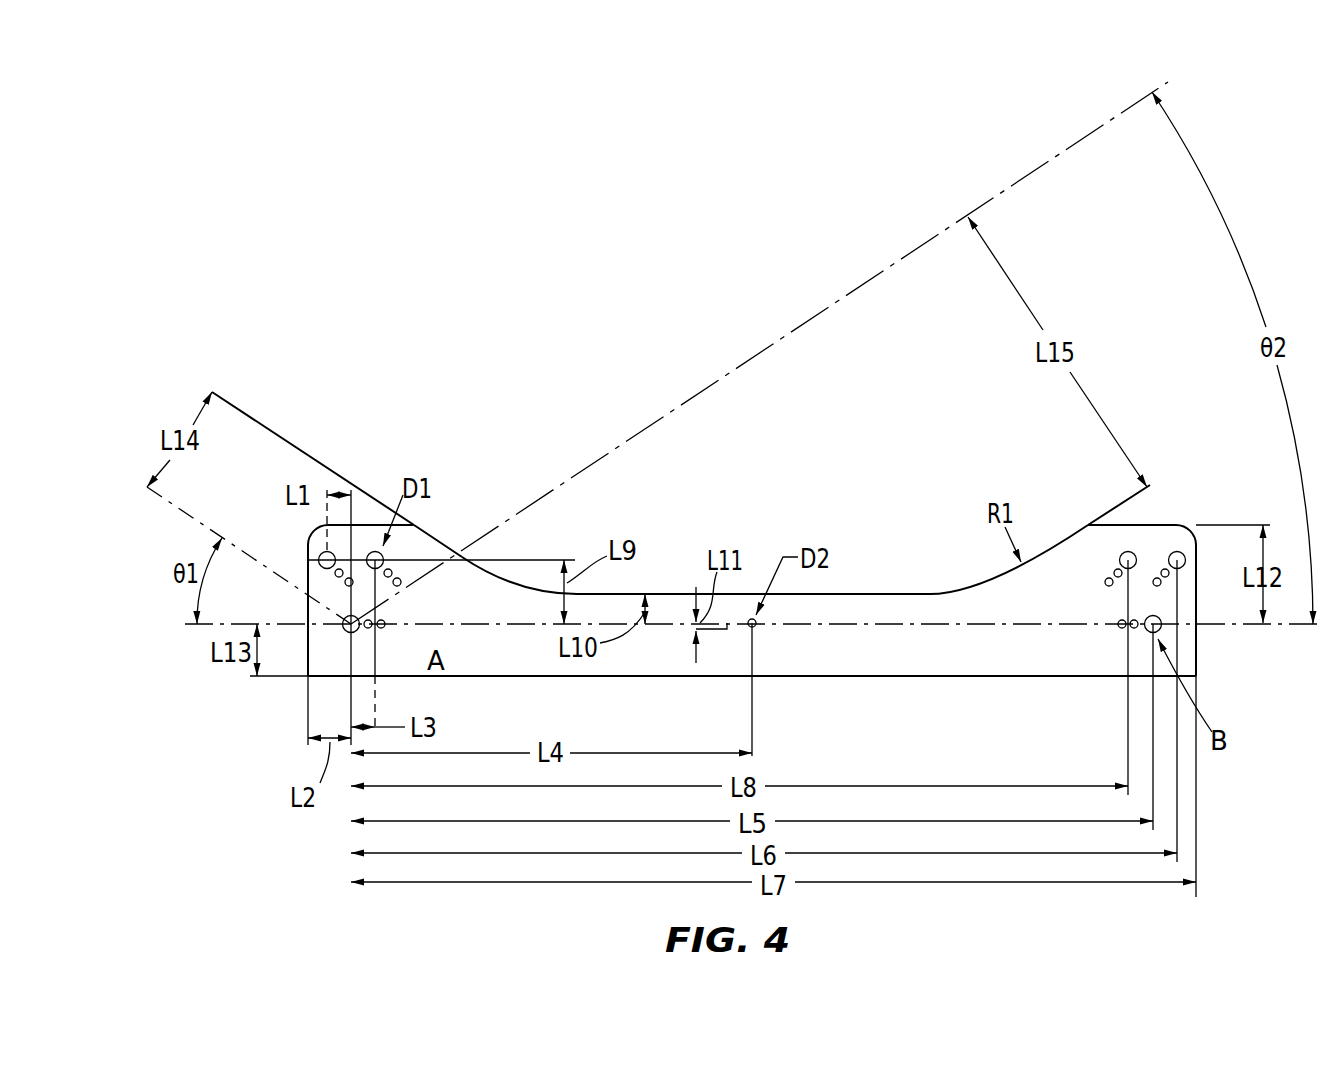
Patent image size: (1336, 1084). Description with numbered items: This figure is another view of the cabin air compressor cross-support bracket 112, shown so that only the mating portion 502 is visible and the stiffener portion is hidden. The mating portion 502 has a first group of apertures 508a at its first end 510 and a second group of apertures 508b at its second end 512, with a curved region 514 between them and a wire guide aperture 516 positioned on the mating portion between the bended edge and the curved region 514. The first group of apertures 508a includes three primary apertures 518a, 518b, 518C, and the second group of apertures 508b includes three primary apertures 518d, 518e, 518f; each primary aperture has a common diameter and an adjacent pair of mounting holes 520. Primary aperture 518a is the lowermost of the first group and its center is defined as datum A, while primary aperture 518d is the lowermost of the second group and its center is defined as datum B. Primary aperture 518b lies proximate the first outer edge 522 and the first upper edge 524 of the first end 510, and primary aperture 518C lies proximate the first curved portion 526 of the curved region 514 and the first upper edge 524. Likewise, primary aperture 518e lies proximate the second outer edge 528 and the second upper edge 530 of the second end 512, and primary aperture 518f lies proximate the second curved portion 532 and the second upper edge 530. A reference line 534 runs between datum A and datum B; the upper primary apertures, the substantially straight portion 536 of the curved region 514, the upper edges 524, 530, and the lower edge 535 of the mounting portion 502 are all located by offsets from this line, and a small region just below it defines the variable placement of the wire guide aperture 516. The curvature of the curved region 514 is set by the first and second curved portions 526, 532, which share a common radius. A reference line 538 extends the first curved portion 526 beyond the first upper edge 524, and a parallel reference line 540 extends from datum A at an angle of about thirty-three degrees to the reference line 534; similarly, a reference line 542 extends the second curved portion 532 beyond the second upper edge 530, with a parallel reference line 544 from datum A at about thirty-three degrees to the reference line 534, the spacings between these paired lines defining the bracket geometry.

The cross-support bracket 112 is at (625, 240).
The mating portion 502 is at (762, 544).
The first group of apertures 508a is at (363, 541).
The second group of apertures 508b is at (1153, 546).
The first end 510 is at (298, 420).
The second end 512 is at (1145, 452).
The curved region 514 is at (868, 500).
The wire guide aperture 516 is at (752, 617).
The primary aperture 518a is at (351, 624).
The primary aperture 518b is at (307, 560).
The primary aperture 518C is at (403, 566).
The primary aperture 518d is at (1162, 630).
The primary aperture 518e is at (1180, 548).
The primary aperture 518f is at (1118, 551).
The mounting holes 520 is at (387, 555).
The first outer edge 522 is at (307, 610).
The first upper edge 524 is at (382, 545).
The first curved portion 526 is at (448, 542).
The second outer edge 528 is at (1197, 643).
The second upper edge 530 is at (1167, 520).
The second curved portion 532 is at (1040, 550).
The reference line 534 is at (193, 630).
The lower edge 535 is at (1003, 677).
The substantially straight portion 536 is at (663, 594).
The reference line 538 is at (235, 404).
The reference line 540 is at (153, 500).
The reference line 542 is at (1118, 502).
The reference line 544 is at (868, 284).